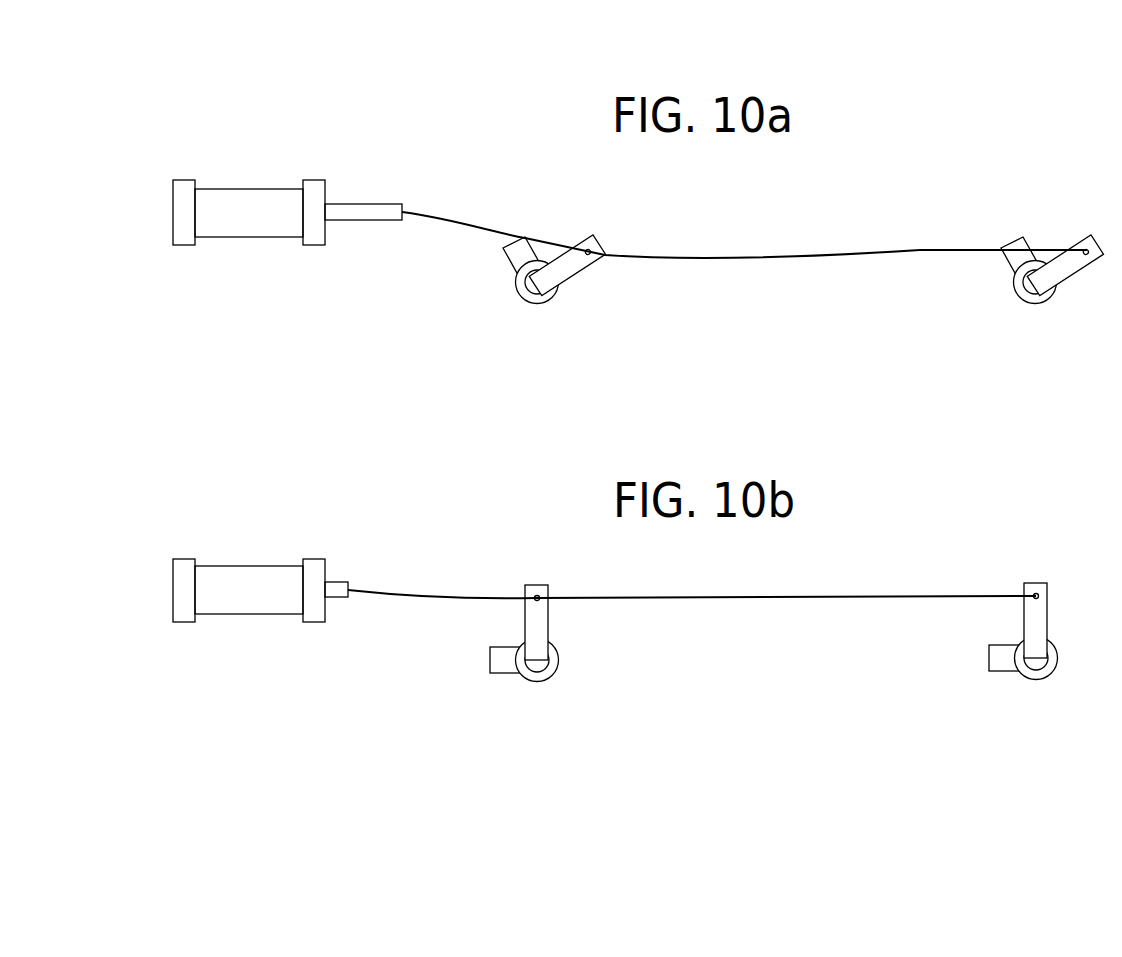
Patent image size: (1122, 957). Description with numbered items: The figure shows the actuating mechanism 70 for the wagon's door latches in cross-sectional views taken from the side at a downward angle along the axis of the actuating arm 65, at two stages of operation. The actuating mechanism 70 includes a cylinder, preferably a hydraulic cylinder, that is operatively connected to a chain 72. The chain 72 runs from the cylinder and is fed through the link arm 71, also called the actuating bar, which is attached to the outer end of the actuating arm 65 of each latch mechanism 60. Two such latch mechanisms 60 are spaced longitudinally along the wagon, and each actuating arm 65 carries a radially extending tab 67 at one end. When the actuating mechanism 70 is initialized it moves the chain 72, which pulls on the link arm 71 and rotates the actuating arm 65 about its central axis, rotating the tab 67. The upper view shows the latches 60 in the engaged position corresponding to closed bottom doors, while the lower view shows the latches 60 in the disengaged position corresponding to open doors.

In FIG. 10a, the latch mechanism 60 is at (492, 328).
In FIG. 10b, the latch mechanism 60 is at (536, 735).
In FIG. 10a, the actuating arm 65 is at (520, 302).
In FIG. 10b, the actuating arm 65 is at (550, 678).
In FIG. 10a, the tab 67 is at (518, 257).
In FIG. 10b, the tab 67 is at (502, 665).
In FIG. 10a, the actuating mechanism 70 is at (210, 141).
In FIG. 10b, the actuating mechanism 70 is at (210, 521).
In FIG. 10a, the link arm 71 is at (578, 265).
In FIG. 10b, the link arm 71 is at (543, 627).
In FIG. 10a, the chain 72 is at (721, 259).
In FIG. 10b, the chain 72 is at (712, 602).